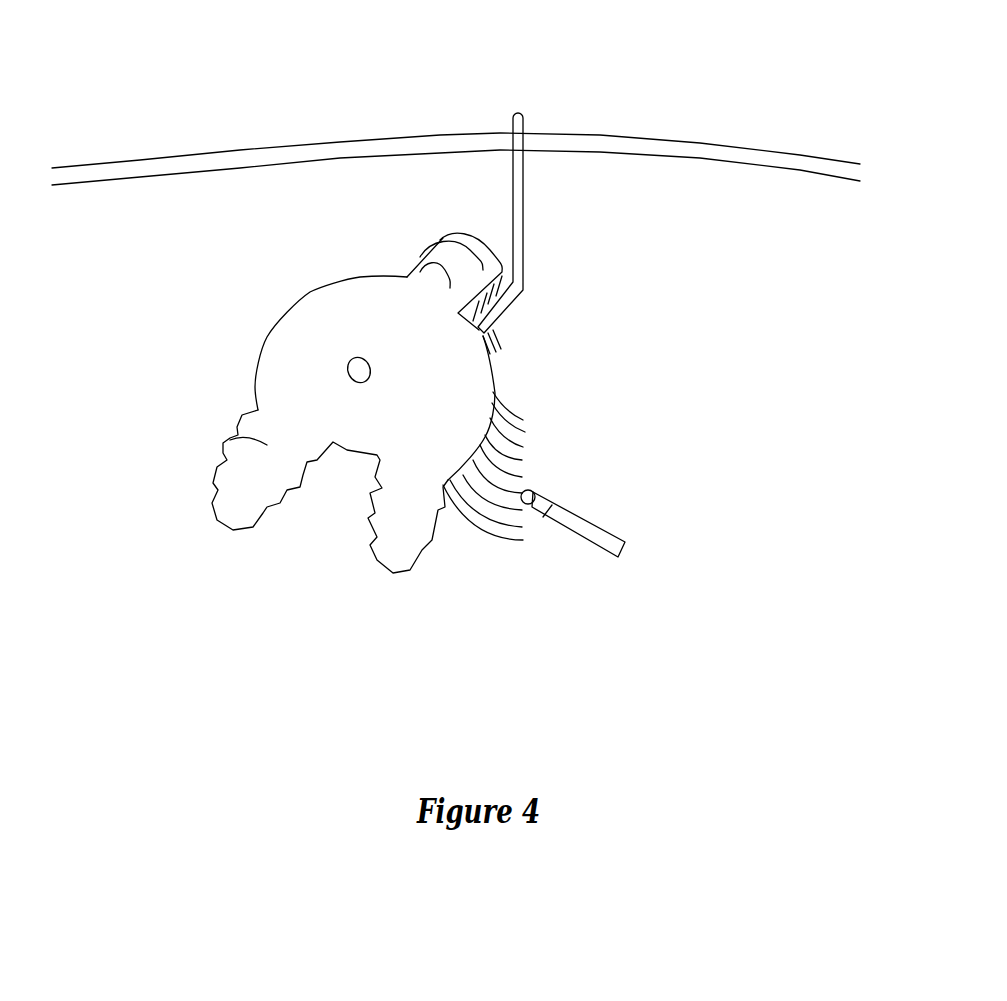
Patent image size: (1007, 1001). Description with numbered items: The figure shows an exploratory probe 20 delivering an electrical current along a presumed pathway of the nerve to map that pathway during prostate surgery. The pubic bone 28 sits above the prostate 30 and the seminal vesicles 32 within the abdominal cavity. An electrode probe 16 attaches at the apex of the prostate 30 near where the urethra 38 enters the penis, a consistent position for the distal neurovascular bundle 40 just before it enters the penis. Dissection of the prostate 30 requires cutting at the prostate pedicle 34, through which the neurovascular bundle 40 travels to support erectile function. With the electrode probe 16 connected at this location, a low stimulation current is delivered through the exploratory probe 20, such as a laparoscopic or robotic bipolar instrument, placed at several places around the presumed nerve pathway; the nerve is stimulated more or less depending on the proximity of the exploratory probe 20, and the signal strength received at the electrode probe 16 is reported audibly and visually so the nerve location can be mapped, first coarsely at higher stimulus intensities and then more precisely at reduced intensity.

The electrode probe 16 is at (510, 115).
The pubic bone 28 is at (747, 76).
The urethra 38 is at (433, 252).
The prostate 30 is at (300, 325).
The seminal vesicles 32 is at (233, 438).
The neurovascular bundle 40 is at (503, 333).
The prostate pedicle 34 is at (520, 443).
The exploratory probe 20 is at (535, 500).